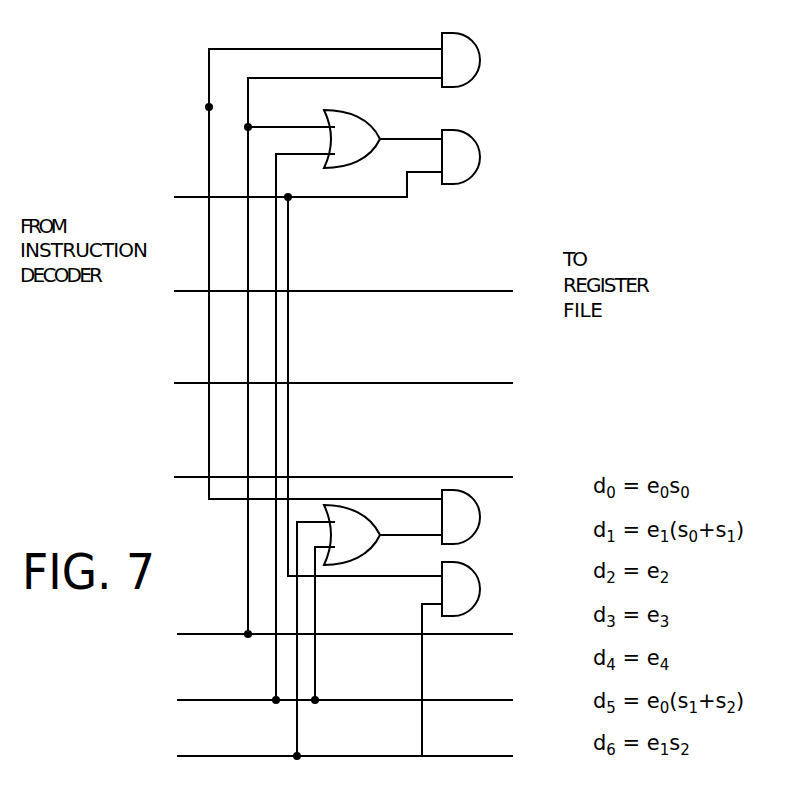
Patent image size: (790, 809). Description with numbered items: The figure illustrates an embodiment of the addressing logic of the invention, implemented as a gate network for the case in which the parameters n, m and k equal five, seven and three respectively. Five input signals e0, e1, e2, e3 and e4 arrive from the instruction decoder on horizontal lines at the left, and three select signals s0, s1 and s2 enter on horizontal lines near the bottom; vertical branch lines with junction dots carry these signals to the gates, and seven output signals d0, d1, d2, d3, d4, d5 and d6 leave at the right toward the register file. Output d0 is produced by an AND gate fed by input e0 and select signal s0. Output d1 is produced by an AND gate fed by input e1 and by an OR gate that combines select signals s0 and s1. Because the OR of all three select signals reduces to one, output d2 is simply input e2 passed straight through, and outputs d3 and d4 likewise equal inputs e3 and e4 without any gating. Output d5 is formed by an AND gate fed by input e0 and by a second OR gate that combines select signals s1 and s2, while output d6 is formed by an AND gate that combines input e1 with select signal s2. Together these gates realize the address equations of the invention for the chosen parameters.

The input signal e0 is at (209, 107).
The input signal e1 is at (294, 374).
The input signal e2 is at (329, 292).
The input signal e3 is at (329, 384).
The input signal e4 is at (329, 478).
The select signal s0 is at (329, 364).
The select signal s1 is at (329, 435).
The select signal s2 is at (329, 647).
The output signal d0 is at (480, 60).
The output signal d1 is at (480, 157).
The output signal d2 is at (500, 291).
The output signal d3 is at (500, 383).
The output signal d4 is at (500, 477).
The output signal d5 is at (480, 517).
The output signal d6 is at (480, 589).